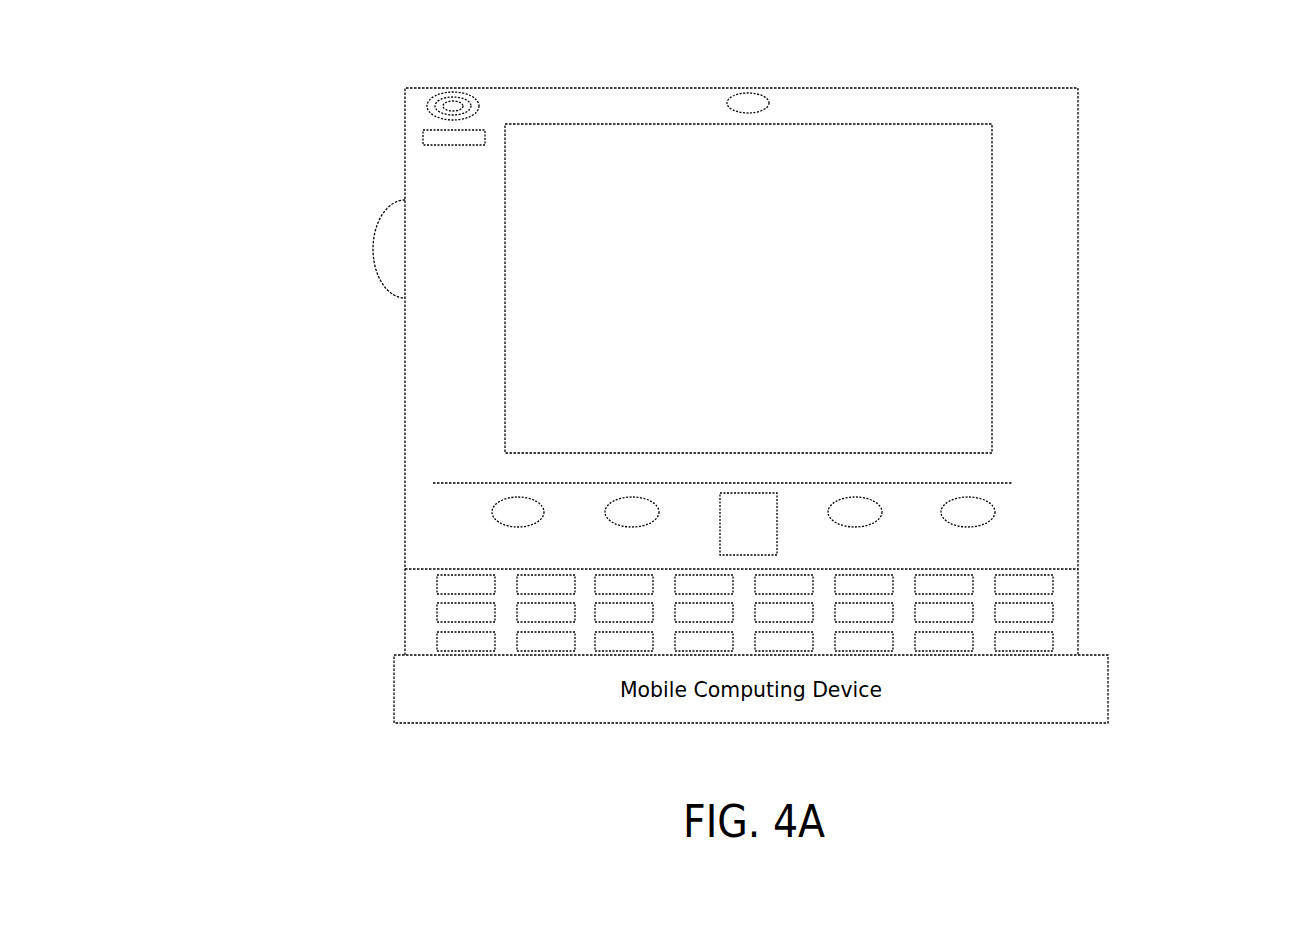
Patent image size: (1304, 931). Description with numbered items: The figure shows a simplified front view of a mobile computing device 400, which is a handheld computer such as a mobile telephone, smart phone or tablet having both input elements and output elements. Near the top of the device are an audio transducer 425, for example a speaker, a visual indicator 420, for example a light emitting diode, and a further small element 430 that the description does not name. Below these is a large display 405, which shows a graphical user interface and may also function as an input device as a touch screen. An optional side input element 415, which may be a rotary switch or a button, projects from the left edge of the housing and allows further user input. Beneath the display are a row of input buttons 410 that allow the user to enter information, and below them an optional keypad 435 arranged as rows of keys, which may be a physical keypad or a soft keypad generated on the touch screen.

The mobile computing device 400 is at (1062, 98).
The display 405 is at (655, 398).
The input buttons 410 is at (747, 528).
The side input element 415 is at (391, 250).
The visual indicator 420 is at (423, 140).
The audio transducer 425 is at (427, 106).
The sensor 430 is at (769, 104).
The keypad 435 is at (416, 645).